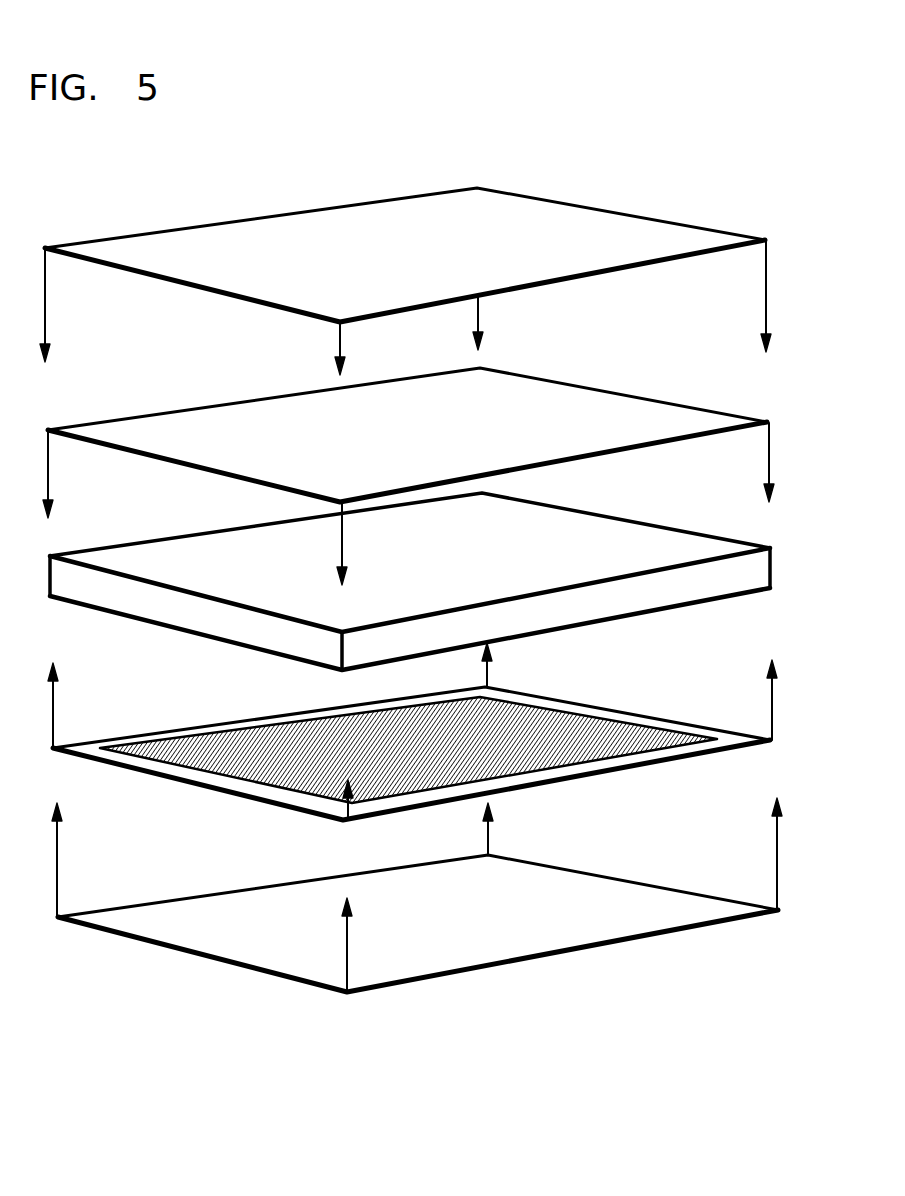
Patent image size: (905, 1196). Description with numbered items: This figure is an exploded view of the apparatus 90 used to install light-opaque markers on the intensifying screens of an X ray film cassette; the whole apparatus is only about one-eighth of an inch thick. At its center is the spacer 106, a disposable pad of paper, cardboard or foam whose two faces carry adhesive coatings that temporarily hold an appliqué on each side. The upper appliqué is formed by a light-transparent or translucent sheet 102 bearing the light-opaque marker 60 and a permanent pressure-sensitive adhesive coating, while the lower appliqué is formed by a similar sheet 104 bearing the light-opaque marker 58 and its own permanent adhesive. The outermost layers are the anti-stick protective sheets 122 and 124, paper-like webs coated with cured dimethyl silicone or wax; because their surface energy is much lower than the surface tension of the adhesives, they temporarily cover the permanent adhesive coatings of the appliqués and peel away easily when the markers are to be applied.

The anti-stick protective sheet 122 is at (378, 271).
The light-transparent or translucent sheet 102 is at (618, 403).
The light-opaque marker 60 is at (277, 417).
The spacer 106 is at (463, 581).
The light-transparent or translucent sheet 104 is at (640, 720).
The light-opaque marker 58 is at (285, 740).
The anti-stick protective sheet 124 is at (421, 948).
The apparatus 90 is at (411, 698).